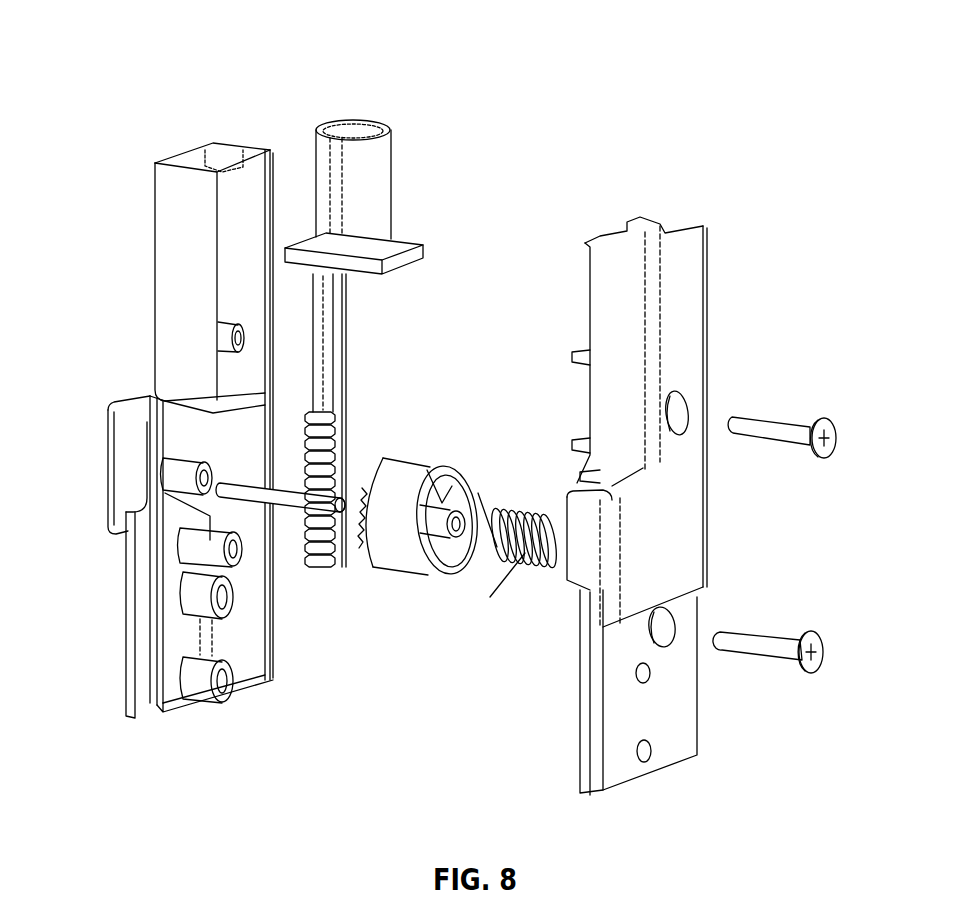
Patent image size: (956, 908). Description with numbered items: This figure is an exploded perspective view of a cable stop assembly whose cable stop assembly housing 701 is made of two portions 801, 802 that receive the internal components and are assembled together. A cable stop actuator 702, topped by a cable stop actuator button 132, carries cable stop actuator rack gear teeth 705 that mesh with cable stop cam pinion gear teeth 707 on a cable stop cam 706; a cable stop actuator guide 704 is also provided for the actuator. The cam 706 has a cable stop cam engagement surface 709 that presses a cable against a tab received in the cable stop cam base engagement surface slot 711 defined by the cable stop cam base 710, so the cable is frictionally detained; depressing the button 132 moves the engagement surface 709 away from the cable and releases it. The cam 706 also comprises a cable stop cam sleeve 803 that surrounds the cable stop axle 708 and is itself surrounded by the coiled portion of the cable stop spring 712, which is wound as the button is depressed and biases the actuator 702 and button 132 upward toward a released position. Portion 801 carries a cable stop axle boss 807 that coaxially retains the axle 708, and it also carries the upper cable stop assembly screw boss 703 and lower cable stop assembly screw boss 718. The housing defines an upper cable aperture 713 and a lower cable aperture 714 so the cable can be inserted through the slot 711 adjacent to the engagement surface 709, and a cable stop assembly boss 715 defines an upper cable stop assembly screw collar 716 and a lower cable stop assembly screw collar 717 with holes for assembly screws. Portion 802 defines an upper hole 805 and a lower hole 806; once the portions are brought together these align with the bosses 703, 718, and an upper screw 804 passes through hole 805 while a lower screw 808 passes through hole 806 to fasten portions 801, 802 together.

The cable stop actuator button 132 is at (388, 164).
The cable stop assembly housing 701 is at (163, 273).
The cable stop actuator 702 is at (343, 344).
The upper cable stop assembly screw boss 703 is at (227, 337).
The cable stop actuator guide 704 is at (580, 350).
The cable stop actuator rack gear teeth 705 is at (333, 433).
The cable stop cam 706 is at (462, 567).
The cable stop cam pinion gear teeth 707 is at (365, 538).
The cable stop axle 708 is at (275, 485).
The cable stop cam engagement surface 709 is at (397, 522).
The cable stop cam base 710 is at (118, 522).
The cable stop cam base engagement surface slot 711 is at (157, 478).
The cable stop spring 712 is at (507, 587).
The upper cable aperture 713 is at (178, 423).
The lower cable aperture 714 is at (180, 717).
The cable stop assembly boss 715 is at (183, 630).
The upper cable stop assembly screw collar 716 is at (193, 600).
The lower cable stop assembly screw collar 717 is at (197, 677).
The lower cable stop assembly screw boss 718 is at (207, 552).
The portion of cable stop assembly housing 801 is at (163, 217).
The portion of cable stop assembly housing 802 is at (692, 273).
The cable stop cam sleeve 803 is at (460, 492).
The upper screw 804 is at (770, 417).
The upper hole 805 is at (677, 410).
The lower hole 806 is at (668, 640).
The cable stop axle boss 807 is at (180, 473).
The lower screw 808 is at (762, 648).